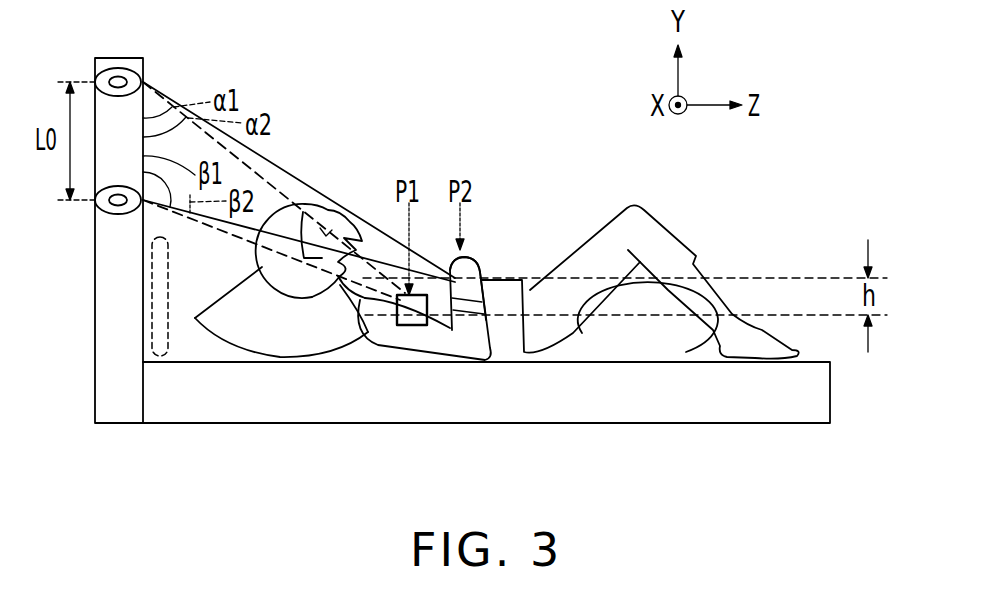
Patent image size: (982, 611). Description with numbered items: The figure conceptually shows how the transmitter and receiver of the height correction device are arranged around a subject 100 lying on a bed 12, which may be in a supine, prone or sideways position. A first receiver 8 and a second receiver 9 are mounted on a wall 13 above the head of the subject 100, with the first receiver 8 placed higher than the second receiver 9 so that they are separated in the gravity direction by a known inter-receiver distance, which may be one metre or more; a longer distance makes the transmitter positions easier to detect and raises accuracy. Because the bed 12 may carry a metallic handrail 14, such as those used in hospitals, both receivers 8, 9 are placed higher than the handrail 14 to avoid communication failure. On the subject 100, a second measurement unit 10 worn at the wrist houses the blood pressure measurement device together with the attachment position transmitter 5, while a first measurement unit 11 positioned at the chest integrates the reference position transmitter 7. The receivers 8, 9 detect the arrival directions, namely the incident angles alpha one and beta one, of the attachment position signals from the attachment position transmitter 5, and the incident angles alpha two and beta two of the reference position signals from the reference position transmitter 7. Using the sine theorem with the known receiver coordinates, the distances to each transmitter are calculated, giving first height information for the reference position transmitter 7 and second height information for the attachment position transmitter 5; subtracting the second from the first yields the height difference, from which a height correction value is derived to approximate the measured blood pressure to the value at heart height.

The first receiver 8 is at (108, 66).
The second receiver 9 is at (95, 211).
The wall 13 is at (136, 58).
The handrail 14 is at (143, 306).
The bed 12 is at (598, 424).
The subject 100 is at (584, 240).
The second measurement unit 10 is at (498, 274).
The attachment position transmitter 5 is at (482, 272).
The first measurement unit 11 is at (421, 385).
The reference position transmitter 7 is at (410, 325).